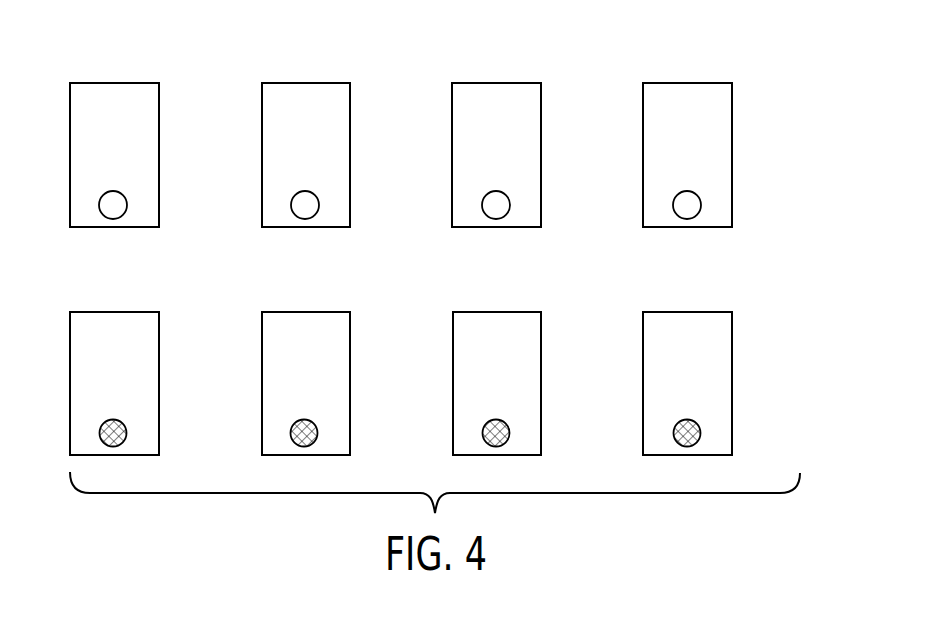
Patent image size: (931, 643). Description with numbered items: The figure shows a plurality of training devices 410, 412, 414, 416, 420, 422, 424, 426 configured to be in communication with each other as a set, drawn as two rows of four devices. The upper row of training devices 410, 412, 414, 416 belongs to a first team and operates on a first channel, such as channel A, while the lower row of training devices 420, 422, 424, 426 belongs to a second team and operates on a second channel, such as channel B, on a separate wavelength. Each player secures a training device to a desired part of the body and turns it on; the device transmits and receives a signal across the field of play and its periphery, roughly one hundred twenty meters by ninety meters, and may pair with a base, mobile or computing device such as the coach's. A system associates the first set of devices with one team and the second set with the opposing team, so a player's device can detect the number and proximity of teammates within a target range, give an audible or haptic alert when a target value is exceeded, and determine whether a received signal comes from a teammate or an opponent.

The training device 410 is at (159, 155).
The training device 412 is at (350, 155).
The training device 414 is at (541, 155).
The training device 416 is at (732, 155).
The training device 420 is at (159, 384).
The training device 422 is at (350, 384).
The training device 424 is at (541, 384).
The training device 426 is at (732, 384).